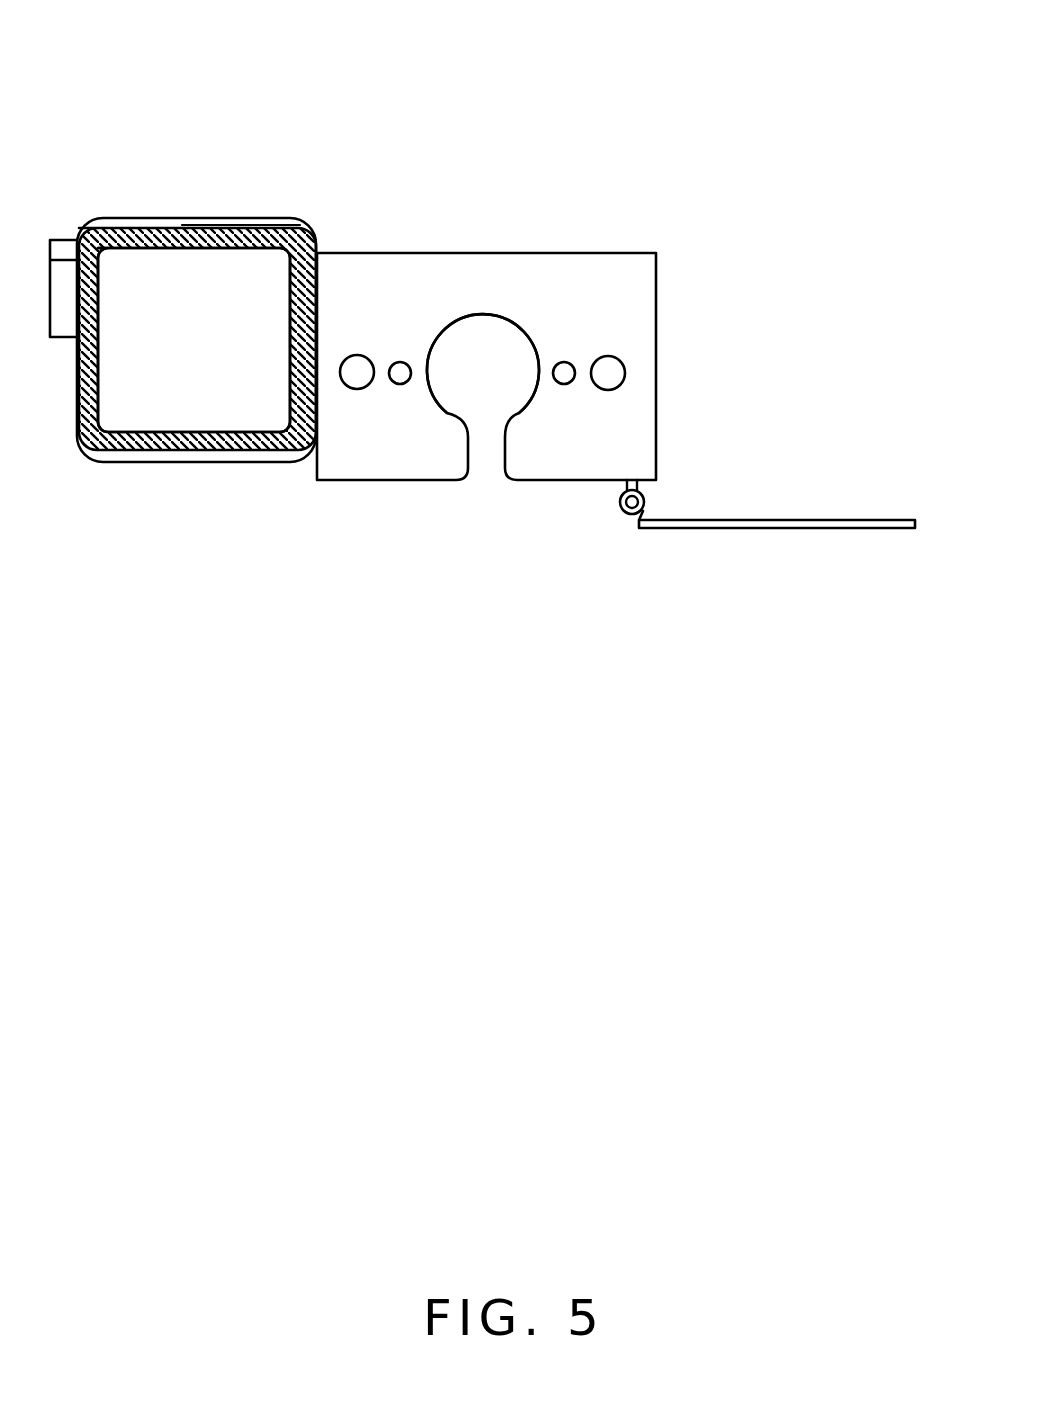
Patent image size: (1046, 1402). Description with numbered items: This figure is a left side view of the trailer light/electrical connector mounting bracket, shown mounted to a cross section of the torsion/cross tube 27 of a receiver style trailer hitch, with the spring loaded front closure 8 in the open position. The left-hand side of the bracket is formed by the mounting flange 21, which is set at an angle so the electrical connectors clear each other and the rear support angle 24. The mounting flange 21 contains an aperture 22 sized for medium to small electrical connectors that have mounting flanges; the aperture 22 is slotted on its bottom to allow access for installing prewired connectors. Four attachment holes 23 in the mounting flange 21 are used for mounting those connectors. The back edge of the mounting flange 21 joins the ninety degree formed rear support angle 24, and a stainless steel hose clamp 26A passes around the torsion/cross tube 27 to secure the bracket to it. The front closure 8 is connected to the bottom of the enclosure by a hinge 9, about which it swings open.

The front closure 8 is at (809, 529).
The hinge 9 is at (618, 505).
The mounting flange 21 is at (339, 483).
The aperture 22 is at (438, 356).
The attachment holes 23 is at (357, 353).
The rear support angle 24 is at (261, 214).
The hose clamp 26A is at (60, 236).
The torsion/cross tube 27 is at (290, 329).